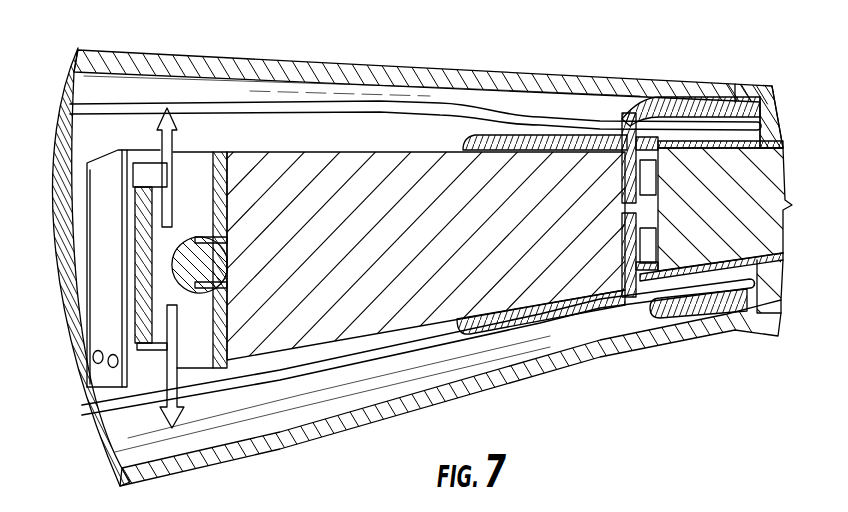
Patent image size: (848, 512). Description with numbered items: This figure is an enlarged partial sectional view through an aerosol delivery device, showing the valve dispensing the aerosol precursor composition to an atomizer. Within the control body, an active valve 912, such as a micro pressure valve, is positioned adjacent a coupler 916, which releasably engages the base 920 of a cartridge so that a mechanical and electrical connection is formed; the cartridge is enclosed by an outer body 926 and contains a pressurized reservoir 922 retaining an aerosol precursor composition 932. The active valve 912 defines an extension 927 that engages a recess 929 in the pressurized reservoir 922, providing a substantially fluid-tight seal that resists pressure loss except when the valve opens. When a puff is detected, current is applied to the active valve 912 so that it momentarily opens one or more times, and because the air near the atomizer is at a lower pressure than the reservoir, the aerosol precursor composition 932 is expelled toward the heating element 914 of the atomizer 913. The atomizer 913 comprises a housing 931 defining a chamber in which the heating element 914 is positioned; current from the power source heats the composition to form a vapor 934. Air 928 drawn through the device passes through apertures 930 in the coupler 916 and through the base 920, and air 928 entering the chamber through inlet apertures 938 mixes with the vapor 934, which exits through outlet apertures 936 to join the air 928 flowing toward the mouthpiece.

The active valve 912 is at (342, 310).
The atomizer 913 is at (96, 241).
The heating element 914 is at (143, 317).
The coupler 916 is at (680, 327).
The base 920 is at (741, 312).
The pressurized reservoir 922 is at (773, 143).
The outer body 926 is at (773, 306).
The extension 927 is at (597, 295).
The air 928 is at (95, 108).
The recess 929 is at (648, 140).
The apertures 930 is at (637, 122).
The housing 931 is at (105, 287).
The aerosol precursor composition 932 is at (272, 188).
The vapor 934 is at (137, 177).
The outlet apertures 936 is at (168, 185).
The inlet apertures 938 is at (113, 370).